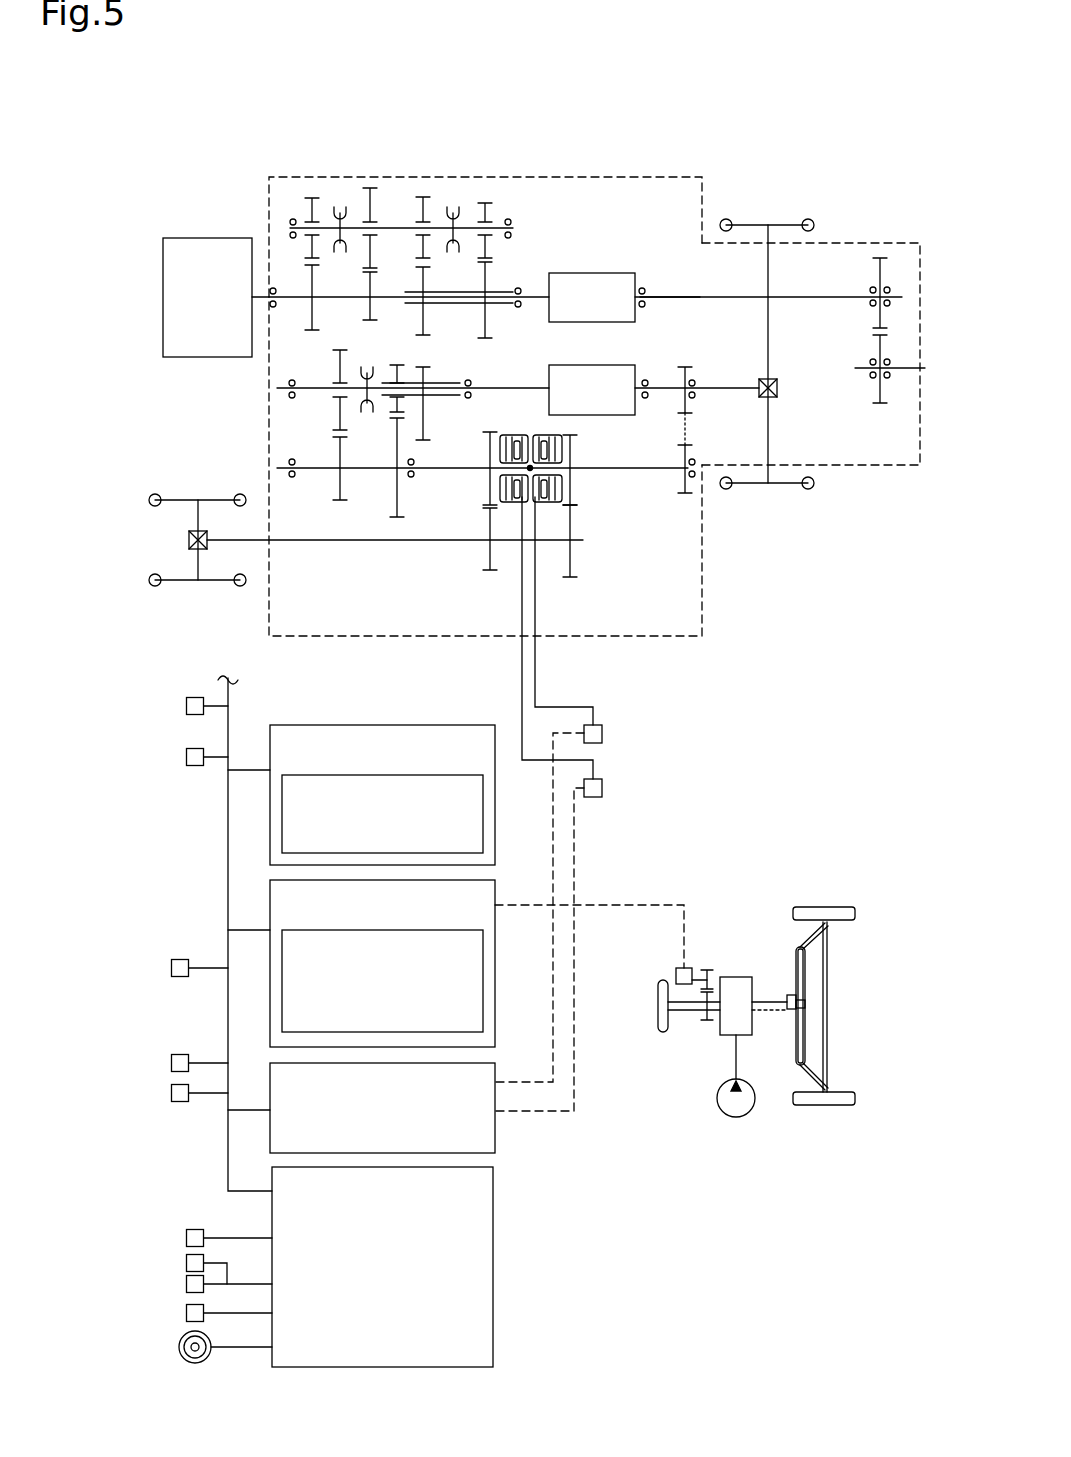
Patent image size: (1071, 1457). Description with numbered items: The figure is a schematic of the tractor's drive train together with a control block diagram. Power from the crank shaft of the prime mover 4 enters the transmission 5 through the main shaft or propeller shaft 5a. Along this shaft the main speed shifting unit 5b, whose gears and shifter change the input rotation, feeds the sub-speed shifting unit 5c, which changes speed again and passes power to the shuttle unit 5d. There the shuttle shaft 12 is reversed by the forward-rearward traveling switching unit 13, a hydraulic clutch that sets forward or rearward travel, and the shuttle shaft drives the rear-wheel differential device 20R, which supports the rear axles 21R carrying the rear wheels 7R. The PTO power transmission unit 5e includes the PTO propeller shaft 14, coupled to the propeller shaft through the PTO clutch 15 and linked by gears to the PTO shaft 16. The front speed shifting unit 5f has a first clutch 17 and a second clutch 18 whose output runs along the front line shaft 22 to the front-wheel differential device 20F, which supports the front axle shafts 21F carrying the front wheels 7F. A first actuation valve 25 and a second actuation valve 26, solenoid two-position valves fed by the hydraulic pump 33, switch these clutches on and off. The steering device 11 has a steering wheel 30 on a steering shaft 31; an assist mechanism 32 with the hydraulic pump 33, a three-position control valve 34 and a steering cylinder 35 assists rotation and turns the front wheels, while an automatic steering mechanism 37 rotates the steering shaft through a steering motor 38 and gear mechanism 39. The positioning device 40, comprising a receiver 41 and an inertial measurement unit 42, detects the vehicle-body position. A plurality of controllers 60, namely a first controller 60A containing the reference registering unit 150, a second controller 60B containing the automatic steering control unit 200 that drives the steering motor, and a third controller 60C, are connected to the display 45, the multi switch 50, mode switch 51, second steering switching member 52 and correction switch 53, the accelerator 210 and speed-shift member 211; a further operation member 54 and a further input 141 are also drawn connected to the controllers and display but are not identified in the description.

The prime mover 4 is at (191, 237).
The transmission 5 is at (873, 241).
The main shaft (propeller shaft) 5a is at (532, 296).
The main speed shifting unit 5b is at (508, 188).
The sub-speed shifting unit 5c is at (369, 521).
The shuttle unit 5d is at (728, 343).
The PTO power transmission unit 5e is at (593, 230).
The front speed shifting unit 5f is at (567, 524).
The front wheels 7F is at (152, 494).
The rear wheels 7R is at (722, 218).
The steering device 11 is at (838, 879).
The shuttle shaft 12 is at (668, 387).
The forward-rearward traveling switching unit 13 is at (636, 372).
The PTO propeller shaft 14 is at (673, 296).
The PTO clutch 15 is at (617, 282).
The PTO shaft 16 is at (907, 372).
The first clutch 17 is at (515, 531).
The second clutch 18 is at (554, 520).
The front-wheel differential device 20F is at (189, 540).
The rear-wheel differential device 20R is at (778, 382).
The front axle shaft 21F is at (197, 567).
The rear axle 21R is at (768, 325).
The front line shaft 22 is at (446, 542).
The first actuation valve 25 is at (602, 787).
The second actuation valve 26 is at (602, 733).
The steering wheel 30 is at (658, 1010).
The steering shaft 31 is at (680, 1013).
The assist mechanism 32 is at (716, 1052).
The hydraulic pump 33 is at (735, 1105).
The control valve 34 is at (740, 1018).
The steering cylinder 35 is at (805, 993).
The automatic steering mechanism 37 is at (707, 956).
The steering motor 38 is at (678, 972).
The gear mechanism 39 is at (711, 968).
The positioning device 40 is at (115, 693).
The receiver 41 is at (186, 707).
The inertial measurement unit 42 is at (186, 758).
The display 45 is at (272, 1208).
The multi switch 50 is at (179, 1347).
The mode switch 51 is at (186, 1239).
The second steering switching member 52 is at (186, 1285).
The correction switch 53 is at (186, 1314).
The switch 54 is at (186, 1264).
The controllers 60 is at (290, 931).
The first controller 60A is at (324, 768).
The second controller 60B is at (290, 963).
The third controller 60C is at (270, 1133).
The sensor 141 is at (171, 969).
The reference registering unit 150 is at (282, 798).
The automatic steering control unit 200 is at (317, 979).
The accelerator 210 is at (171, 1064).
The speed-shift member 211 is at (171, 1094).